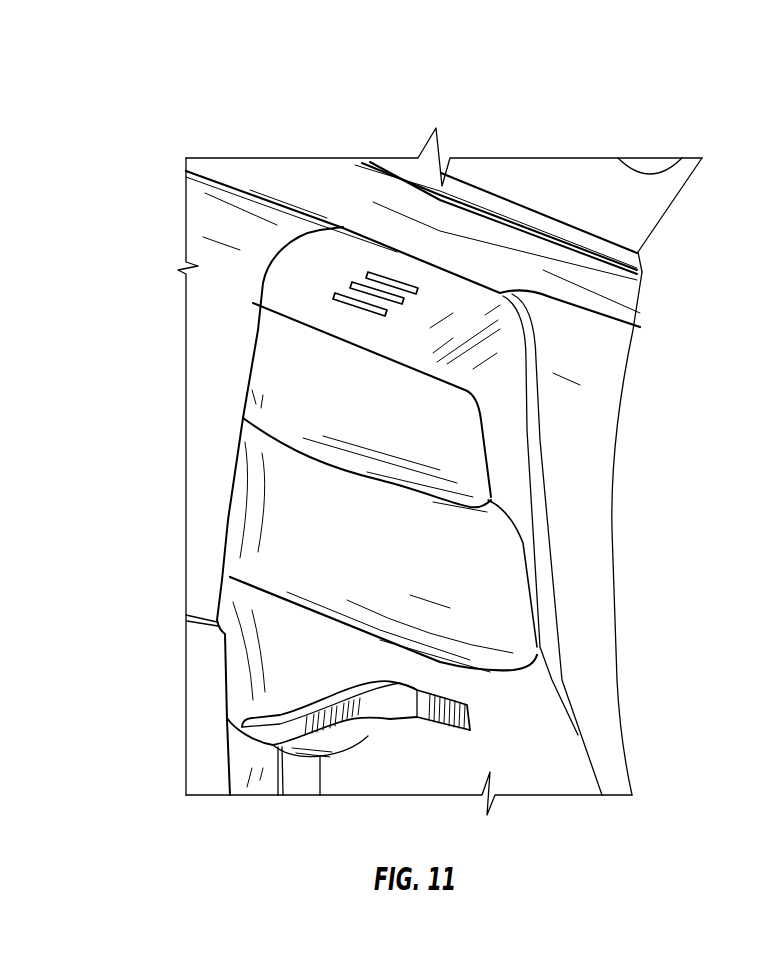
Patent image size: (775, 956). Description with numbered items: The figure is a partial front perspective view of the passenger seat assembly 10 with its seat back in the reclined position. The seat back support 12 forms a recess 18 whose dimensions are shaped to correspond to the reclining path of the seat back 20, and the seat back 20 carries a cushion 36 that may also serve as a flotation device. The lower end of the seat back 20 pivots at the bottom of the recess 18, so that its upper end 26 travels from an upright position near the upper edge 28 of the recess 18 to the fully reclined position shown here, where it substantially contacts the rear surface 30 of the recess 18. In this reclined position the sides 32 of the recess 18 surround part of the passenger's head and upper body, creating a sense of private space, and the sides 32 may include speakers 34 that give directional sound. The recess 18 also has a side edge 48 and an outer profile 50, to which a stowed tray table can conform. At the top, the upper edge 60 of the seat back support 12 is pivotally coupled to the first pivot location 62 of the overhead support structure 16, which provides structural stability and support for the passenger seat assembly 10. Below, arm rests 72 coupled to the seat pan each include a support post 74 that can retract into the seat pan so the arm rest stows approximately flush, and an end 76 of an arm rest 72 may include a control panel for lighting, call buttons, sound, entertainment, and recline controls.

The passenger seat assembly 10 is at (168, 112).
The seat back support 12 is at (213, 357).
The overhead support structure 16 is at (513, 167).
The recess 18 is at (517, 370).
The seat back 20 is at (527, 620).
The upper end 26 is at (470, 402).
The upper edge 28 is at (637, 330).
The rear surface 30 is at (280, 307).
The sides 32 is at (322, 250).
The speakers 34 is at (368, 271).
The cushion 36 is at (232, 528).
The side edge 48 is at (200, 504).
The outer profile 50 is at (558, 527).
The upper edge 60 is at (646, 275).
The first pivot location 62 is at (585, 237).
The arm rests 72 is at (362, 722).
The support post 74 is at (290, 777).
The end 76 is at (468, 707).